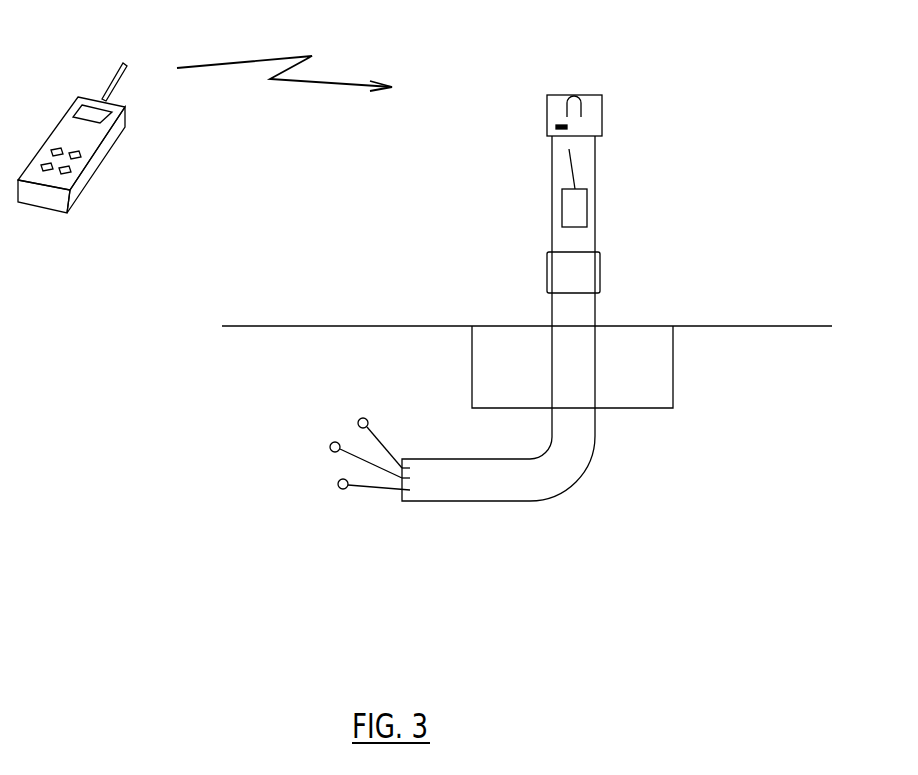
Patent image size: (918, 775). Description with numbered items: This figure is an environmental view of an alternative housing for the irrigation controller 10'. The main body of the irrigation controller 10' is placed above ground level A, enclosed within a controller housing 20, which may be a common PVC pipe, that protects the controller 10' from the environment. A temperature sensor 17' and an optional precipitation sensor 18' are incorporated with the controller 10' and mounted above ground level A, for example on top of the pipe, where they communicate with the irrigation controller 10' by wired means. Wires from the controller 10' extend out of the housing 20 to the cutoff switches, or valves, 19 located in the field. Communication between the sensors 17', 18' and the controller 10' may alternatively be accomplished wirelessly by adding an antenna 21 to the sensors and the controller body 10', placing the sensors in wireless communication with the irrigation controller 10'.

The ground level A is at (541, 316).
The controller housing 20 is at (585, 237).
The precipitation sensor 18' is at (620, 67).
The temperature sensor 17' is at (520, 113).
The antenna 21 is at (573, 165).
The irrigation controller 10' is at (537, 208).
The cutoff switches (valves) 19 is at (338, 481).